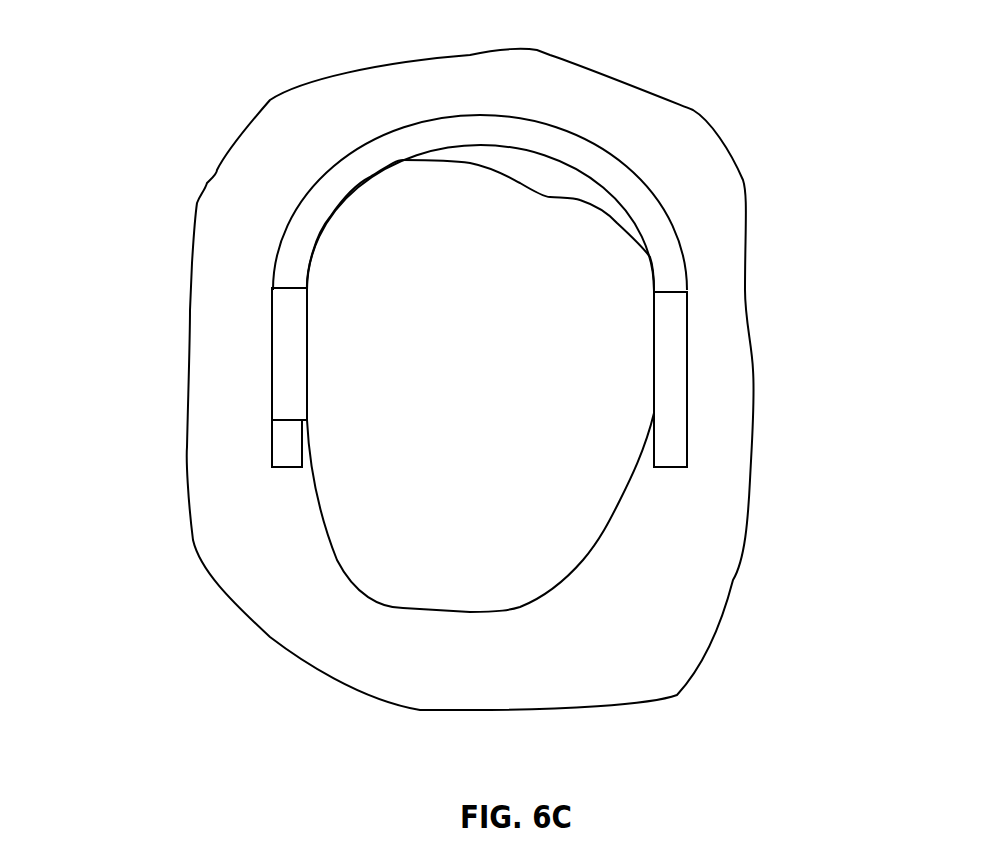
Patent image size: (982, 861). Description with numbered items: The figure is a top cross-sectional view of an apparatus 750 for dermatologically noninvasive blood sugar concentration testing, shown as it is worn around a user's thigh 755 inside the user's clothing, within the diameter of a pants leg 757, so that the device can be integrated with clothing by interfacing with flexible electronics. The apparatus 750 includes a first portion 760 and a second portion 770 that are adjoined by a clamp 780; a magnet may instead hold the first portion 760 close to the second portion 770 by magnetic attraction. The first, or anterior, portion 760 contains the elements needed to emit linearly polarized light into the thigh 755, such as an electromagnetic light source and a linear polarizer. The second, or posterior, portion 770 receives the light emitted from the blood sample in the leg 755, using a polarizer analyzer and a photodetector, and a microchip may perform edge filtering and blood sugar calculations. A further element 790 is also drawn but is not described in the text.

The apparatus 750 is at (140, 58).
The user's thigh 755 is at (620, 500).
The pants leg 757 is at (617, 700).
The first portion 760 is at (270, 392).
The second portion 770 is at (687, 407).
The clamp 780 is at (663, 208).
The lower left module 790 is at (270, 458).